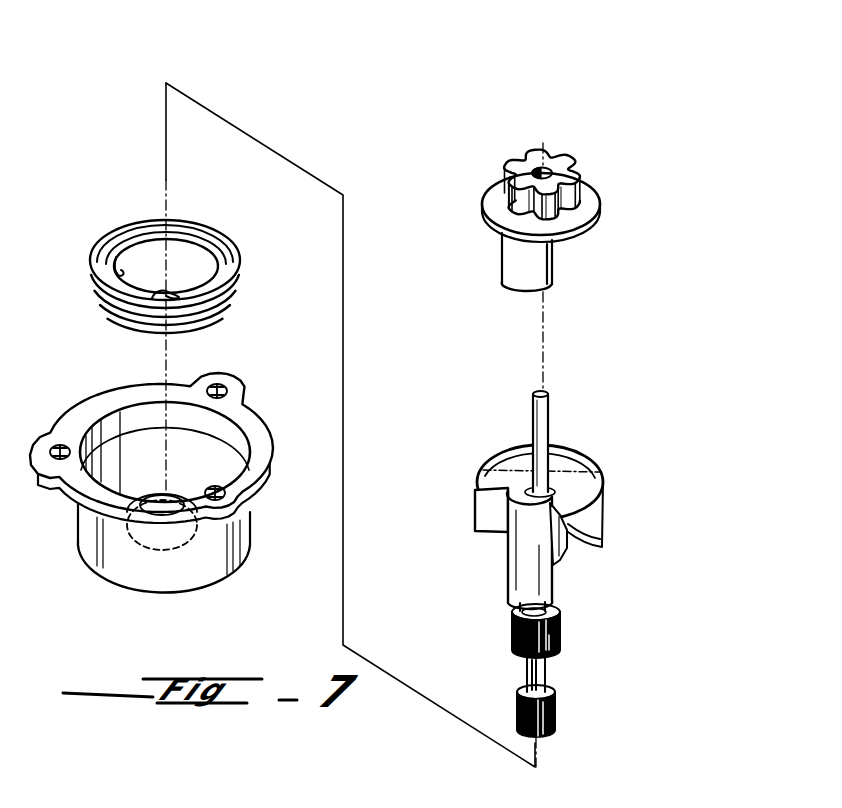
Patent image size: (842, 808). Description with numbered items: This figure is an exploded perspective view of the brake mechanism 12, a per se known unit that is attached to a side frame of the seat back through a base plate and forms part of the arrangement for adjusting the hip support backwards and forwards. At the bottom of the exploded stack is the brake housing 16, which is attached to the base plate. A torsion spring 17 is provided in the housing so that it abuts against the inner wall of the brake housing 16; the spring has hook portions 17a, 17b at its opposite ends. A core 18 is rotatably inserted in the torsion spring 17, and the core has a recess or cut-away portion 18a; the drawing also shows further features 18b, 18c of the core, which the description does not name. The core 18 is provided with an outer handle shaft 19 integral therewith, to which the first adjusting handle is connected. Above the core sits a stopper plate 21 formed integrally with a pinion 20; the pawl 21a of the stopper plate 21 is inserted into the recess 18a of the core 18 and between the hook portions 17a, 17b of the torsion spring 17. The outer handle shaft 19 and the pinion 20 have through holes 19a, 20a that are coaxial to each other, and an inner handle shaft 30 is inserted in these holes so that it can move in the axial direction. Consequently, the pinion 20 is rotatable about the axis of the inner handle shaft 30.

The brake mechanism 12 is at (660, 110).
The brake housing 16 is at (110, 507).
The torsion spring 17 is at (134, 272).
The hook portion 17a is at (156, 297).
The hook portion 17b is at (116, 262).
The core 18 is at (525, 504).
The recess 18a is at (520, 537).
The rotor stop wedge 18b is at (560, 547).
The rotor ledge 18c is at (480, 510).
The outer handle shaft 19 is at (576, 662).
The through hole 19a is at (556, 447).
The pinion 20 is at (542, 169).
The through hole 20a is at (537, 168).
The stopper plate 21 is at (568, 235).
The pawl 21a is at (538, 268).
The inner handle shaft 30 is at (547, 672).